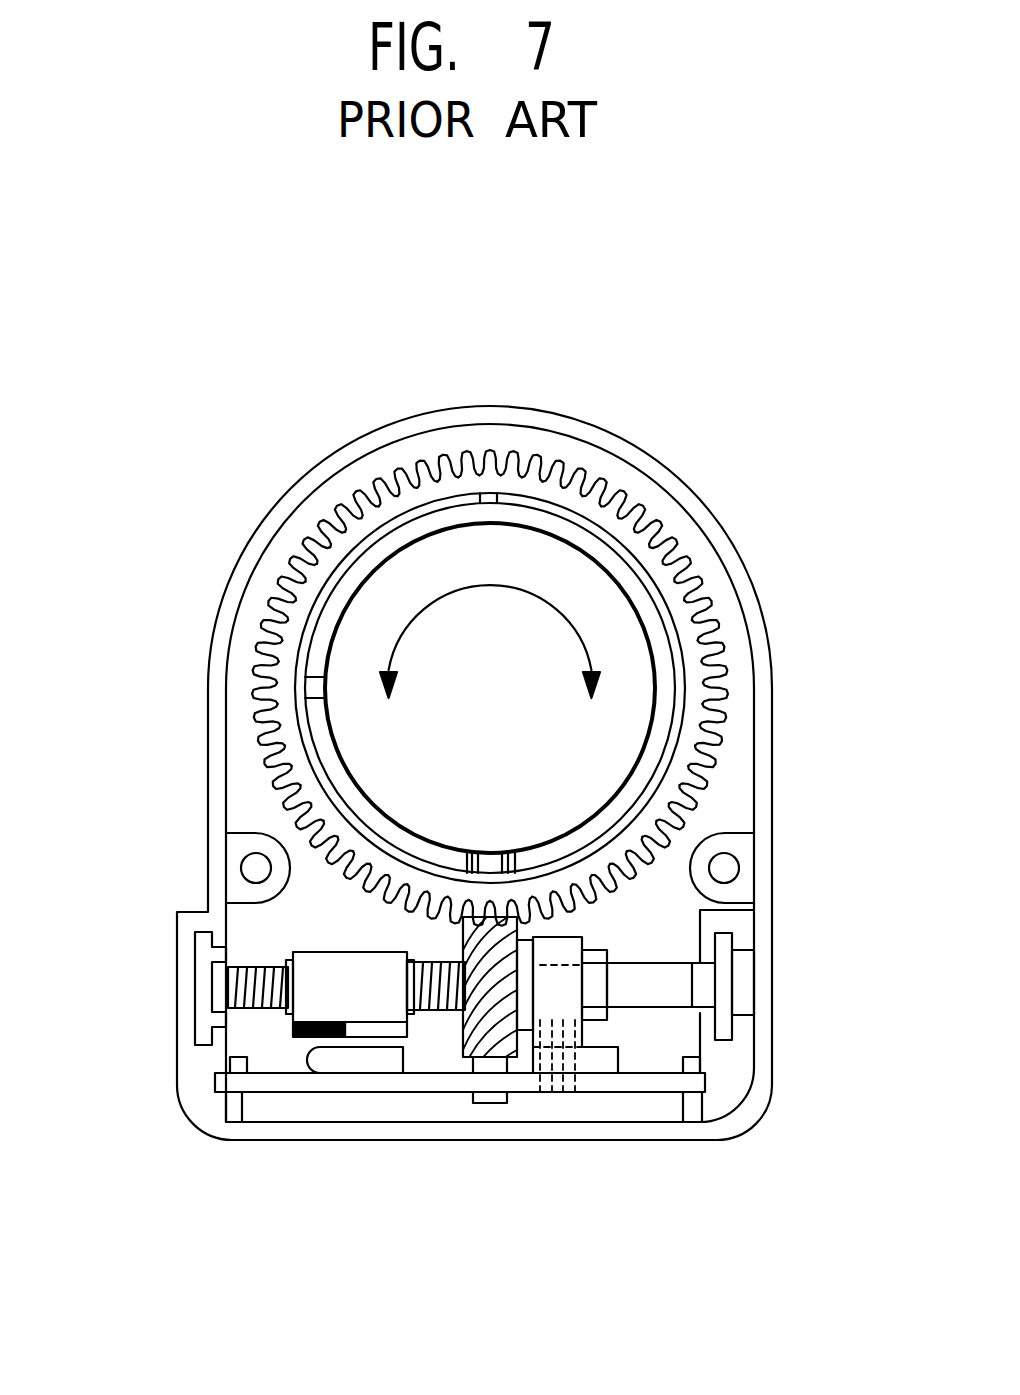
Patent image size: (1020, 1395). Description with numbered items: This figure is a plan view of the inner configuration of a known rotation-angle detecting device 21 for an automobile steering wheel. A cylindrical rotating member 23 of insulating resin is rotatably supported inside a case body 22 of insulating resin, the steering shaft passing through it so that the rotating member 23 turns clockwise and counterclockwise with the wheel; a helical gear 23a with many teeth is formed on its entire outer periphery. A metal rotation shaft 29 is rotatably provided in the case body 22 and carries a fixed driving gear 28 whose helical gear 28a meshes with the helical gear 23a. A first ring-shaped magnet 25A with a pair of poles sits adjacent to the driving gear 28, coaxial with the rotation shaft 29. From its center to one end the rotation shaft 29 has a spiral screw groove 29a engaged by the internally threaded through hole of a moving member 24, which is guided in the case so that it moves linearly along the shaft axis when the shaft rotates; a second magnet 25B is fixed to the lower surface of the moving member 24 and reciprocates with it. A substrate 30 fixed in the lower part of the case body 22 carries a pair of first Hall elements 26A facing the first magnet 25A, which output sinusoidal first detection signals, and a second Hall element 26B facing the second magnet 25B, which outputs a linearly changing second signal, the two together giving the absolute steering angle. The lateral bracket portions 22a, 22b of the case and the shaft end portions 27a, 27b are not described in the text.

The lens barrel drive unit 21 is at (494, 378).
The case body 22 is at (217, 564).
The right bearing bracket 22a is at (740, 920).
The left bearing bracket 22b is at (195, 960).
The rotating member 23 is at (630, 486).
The helical gear 23a is at (658, 526).
The moving member 24 is at (327, 967).
The first ring-shaped magnet 25A is at (560, 936).
The second magnet 25B is at (292, 1059).
The first Hall elements 26A is at (597, 1063).
The second Hall element 26B is at (297, 1090).
The first shaft 27a is at (715, 982).
The second shaft 27b is at (205, 1003).
The driving gear 28 is at (449, 1042).
The helical gear 28a is at (462, 935).
The rotation shaft 29 is at (645, 1008).
The screw groove 29a is at (268, 1010).
The substrate 30 is at (370, 1092).